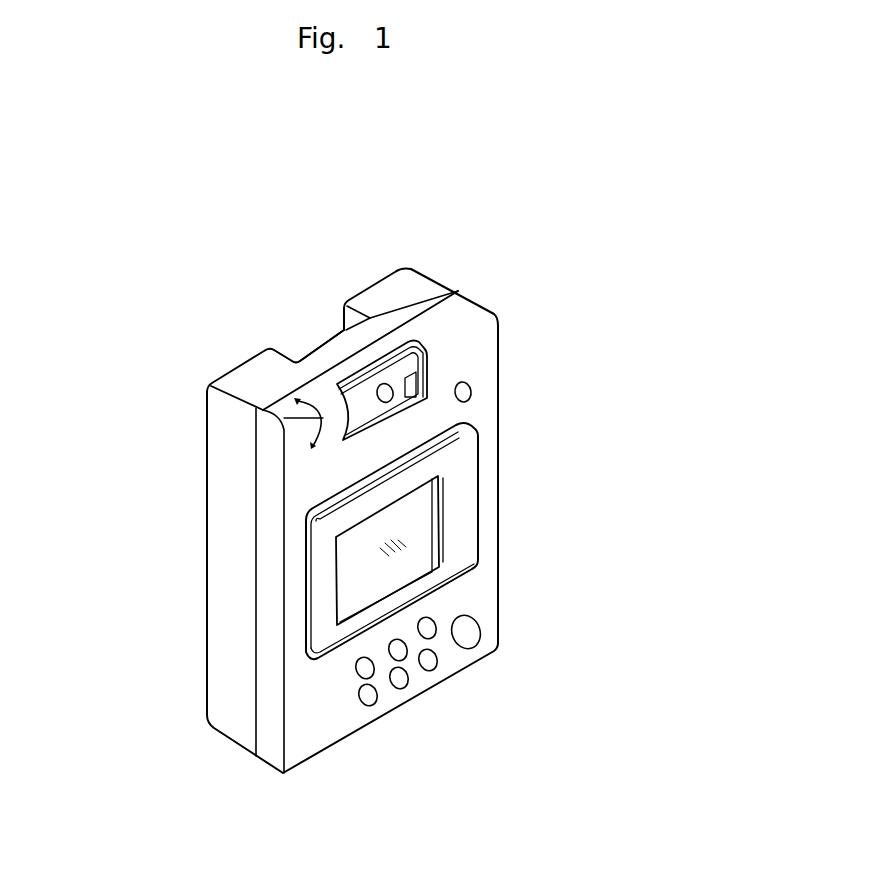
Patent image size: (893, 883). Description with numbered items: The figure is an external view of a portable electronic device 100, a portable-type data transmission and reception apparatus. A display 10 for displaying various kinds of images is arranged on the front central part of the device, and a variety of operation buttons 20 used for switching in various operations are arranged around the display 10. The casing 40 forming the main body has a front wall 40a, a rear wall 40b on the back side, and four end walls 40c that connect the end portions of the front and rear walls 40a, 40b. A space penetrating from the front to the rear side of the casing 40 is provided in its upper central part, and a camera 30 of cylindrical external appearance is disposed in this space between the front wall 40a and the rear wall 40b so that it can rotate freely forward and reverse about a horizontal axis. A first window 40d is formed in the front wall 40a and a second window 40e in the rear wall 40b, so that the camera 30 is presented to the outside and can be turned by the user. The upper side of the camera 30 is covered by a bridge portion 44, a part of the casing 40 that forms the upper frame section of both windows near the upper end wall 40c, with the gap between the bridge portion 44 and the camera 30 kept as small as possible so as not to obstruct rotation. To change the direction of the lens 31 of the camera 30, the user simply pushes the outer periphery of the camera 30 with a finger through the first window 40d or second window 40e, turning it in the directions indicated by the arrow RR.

The portable electronic device 100 is at (441, 228).
The display 10 is at (350, 585).
The operation buttons 20 is at (471, 392).
The camera 30 is at (420, 352).
The lens 31 is at (390, 400).
The casing 40 is at (247, 375).
The front wall 40a is at (300, 483).
The rear wall 40b is at (205, 423).
The end walls 40c is at (425, 283).
The first window 40d is at (417, 374).
The second window 40e is at (303, 356).
The bridge portion 44 is at (340, 347).
The arrow RR is at (263, 410).